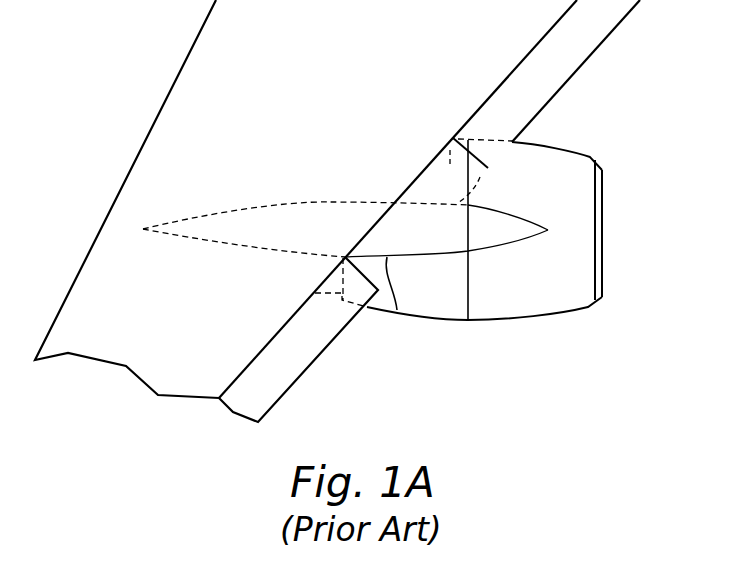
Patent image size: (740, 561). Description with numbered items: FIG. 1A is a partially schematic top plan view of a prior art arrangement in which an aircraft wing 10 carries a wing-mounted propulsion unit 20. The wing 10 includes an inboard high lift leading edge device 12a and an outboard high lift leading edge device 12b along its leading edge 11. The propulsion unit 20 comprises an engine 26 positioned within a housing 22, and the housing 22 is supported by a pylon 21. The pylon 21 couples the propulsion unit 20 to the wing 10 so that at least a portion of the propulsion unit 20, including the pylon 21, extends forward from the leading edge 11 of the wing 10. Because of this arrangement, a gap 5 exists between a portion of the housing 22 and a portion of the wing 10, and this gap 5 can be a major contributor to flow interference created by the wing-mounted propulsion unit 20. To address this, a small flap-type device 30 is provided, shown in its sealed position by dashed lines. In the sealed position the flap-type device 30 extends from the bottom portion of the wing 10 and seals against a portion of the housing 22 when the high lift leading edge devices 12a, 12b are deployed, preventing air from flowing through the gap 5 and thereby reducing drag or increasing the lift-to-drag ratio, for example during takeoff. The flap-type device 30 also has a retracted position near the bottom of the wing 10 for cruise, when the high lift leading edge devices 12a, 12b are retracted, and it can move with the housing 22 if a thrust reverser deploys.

The aircraft wing 10 is at (200, 72).
The leading edge 11 is at (422, 164).
The inboard high lift leading edge device 12a is at (578, 40).
The outboard high lift leading edge device 12b is at (300, 350).
The gap 5 is at (508, 195).
The wing-mounted propulsion unit 20 is at (516, 366).
The pylon 21 is at (398, 313).
The housing 22 is at (527, 160).
The engine 26 is at (455, 305).
The flap-type device 30 is at (450, 140).